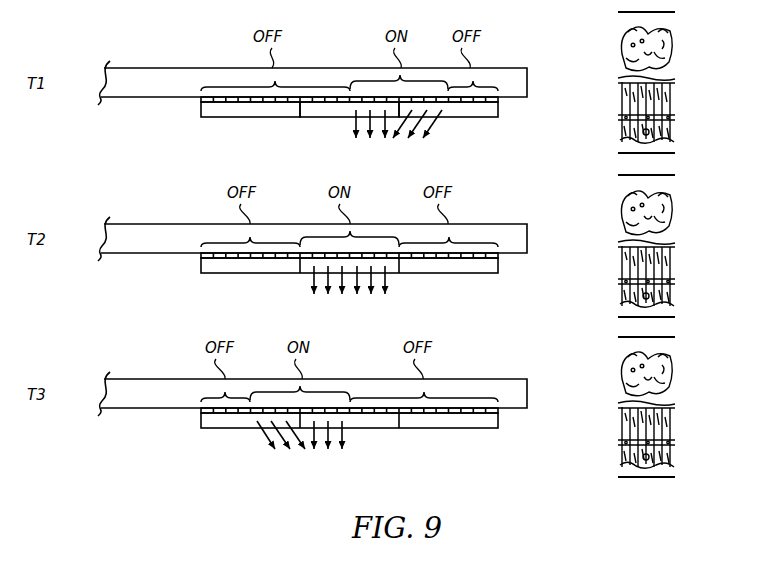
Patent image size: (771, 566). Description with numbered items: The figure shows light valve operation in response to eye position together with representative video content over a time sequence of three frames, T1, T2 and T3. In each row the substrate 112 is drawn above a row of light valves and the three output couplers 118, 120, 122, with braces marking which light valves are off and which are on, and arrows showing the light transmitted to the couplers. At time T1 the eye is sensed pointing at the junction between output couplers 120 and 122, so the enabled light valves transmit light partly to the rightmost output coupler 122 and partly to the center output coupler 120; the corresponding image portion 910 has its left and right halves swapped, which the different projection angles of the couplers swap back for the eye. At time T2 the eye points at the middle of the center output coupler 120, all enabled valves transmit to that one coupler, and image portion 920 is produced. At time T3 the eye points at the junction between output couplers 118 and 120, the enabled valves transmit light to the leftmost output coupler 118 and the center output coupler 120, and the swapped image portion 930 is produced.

The substrate 112 is at (184, 68).
The output coupler 118 is at (205, 117).
The output coupler 120 is at (302, 117).
The output coupler 122 is at (493, 117).
The image portion 910 is at (675, 103).
The image portion 920 is at (675, 233).
The image portion 930 is at (675, 408).